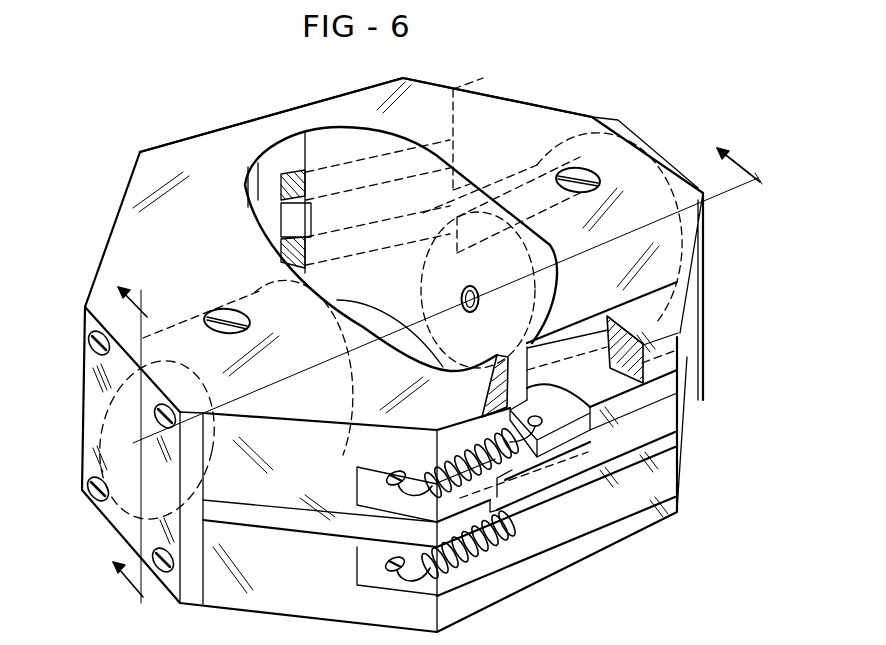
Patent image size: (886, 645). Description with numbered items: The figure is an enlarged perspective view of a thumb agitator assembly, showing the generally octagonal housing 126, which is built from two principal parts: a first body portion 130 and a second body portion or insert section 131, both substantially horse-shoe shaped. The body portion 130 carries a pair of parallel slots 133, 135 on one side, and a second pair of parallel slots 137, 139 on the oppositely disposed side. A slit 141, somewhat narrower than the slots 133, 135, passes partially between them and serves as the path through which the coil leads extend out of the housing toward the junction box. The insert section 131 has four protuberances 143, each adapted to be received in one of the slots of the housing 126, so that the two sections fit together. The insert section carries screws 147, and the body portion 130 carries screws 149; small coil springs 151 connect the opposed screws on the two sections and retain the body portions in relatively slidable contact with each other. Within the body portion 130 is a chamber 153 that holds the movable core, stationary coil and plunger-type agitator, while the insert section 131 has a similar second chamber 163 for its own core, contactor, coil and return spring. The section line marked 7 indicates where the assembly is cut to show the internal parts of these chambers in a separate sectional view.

The housing 126 is at (100, 208).
The first body portion 130 is at (186, 147).
The insert section 131 is at (513, 110).
The slot 133 is at (357, 473).
The slot 135 is at (377, 562).
The slot 137 is at (479, 96).
The slot 139 is at (453, 173).
The slit 141 is at (283, 520).
The protuberances 143 is at (306, 180).
The screws 147 is at (545, 415).
The screws 149 is at (406, 472).
The coil springs 151 is at (500, 473).
The chamber 153 is at (197, 312).
The second chamber 163 is at (647, 183).
The section line 7- 7 is at (428, 366).